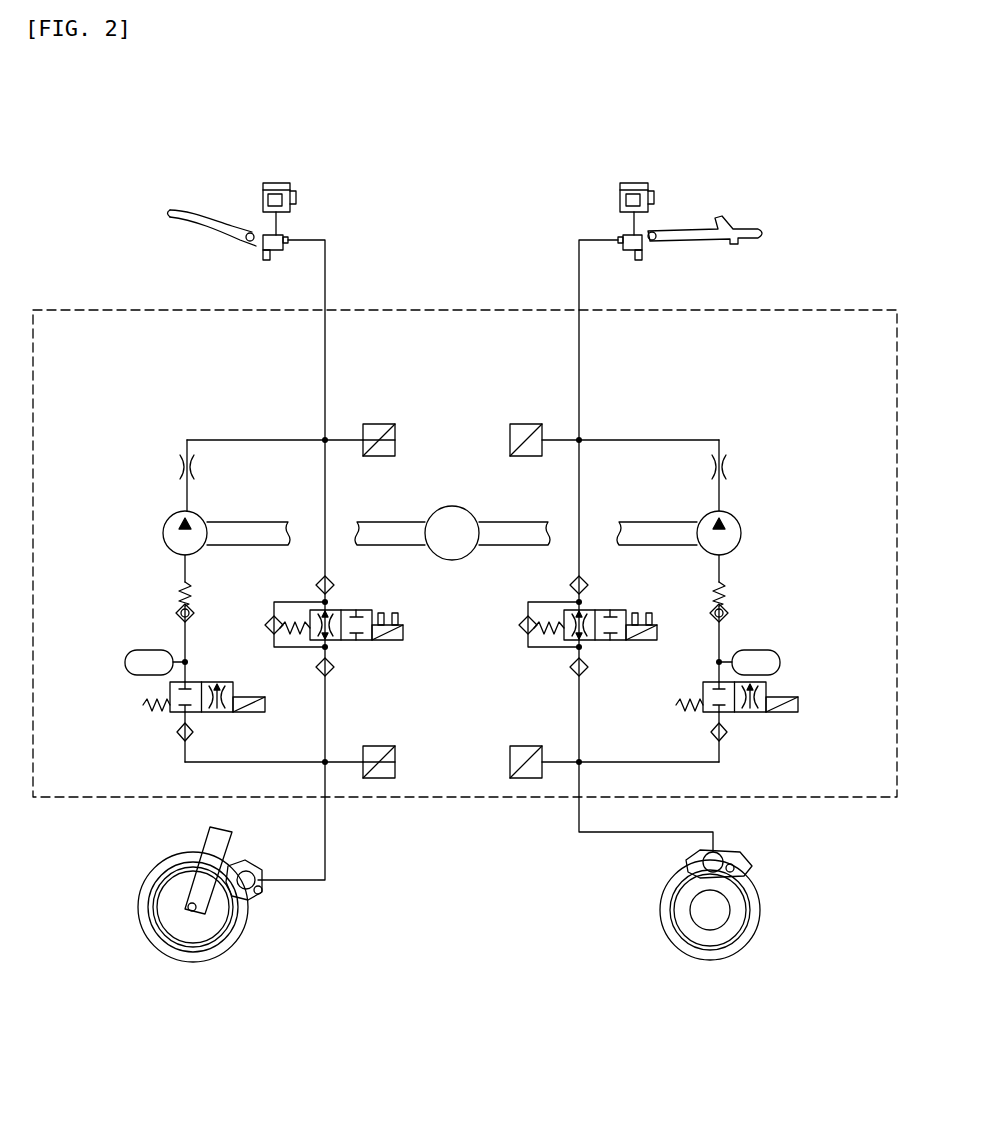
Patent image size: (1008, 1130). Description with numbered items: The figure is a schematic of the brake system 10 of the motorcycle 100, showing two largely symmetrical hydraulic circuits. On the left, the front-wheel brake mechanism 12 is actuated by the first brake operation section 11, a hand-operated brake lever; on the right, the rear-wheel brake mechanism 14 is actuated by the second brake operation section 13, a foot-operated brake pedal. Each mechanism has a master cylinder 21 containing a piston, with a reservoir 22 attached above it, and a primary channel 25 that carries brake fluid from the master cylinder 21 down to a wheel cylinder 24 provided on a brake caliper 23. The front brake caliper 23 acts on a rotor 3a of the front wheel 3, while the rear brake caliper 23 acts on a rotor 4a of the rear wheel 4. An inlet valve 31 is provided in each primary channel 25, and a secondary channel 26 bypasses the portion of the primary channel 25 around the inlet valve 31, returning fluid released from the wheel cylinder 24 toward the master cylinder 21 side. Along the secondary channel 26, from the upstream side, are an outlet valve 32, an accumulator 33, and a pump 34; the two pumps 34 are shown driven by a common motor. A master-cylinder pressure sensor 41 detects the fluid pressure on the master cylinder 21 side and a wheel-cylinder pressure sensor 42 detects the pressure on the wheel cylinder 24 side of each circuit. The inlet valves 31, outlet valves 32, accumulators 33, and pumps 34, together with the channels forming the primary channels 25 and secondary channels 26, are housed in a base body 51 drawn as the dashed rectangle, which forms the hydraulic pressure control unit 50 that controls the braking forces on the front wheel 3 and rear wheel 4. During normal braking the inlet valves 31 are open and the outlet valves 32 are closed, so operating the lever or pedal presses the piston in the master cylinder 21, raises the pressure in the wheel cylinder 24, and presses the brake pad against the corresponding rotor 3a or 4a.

The motorcycle 100 is at (877, 76).
The brake system 10 is at (130, 200).
The first brake operation section 11 is at (198, 212).
The front-wheel brake mechanism 12 is at (360, 130).
The second brake operation section 13 is at (735, 228).
The rear-wheel brake mechanism 14 is at (548, 130).
The hydraulic pressure control unit 50 is at (783, 228).
The base body 51 is at (64, 308).
The master cylinder 21 is at (278, 258).
The reservoir 22 is at (276, 182).
The brake caliper 23 is at (250, 866).
The wheel cylinder 24 is at (258, 888).
The primary channel 25 is at (324, 376).
The secondary channel 26 is at (256, 439).
The inlet valve 31 is at (362, 642).
The outlet valve 32 is at (218, 681).
The accumulator 33 is at (148, 649).
The pump 34 is at (162, 534).
The master-cylinder pressure sensor 41 is at (398, 441).
The wheel-cylinder pressure sensor 42 is at (398, 763).
The front wheel 3 is at (219, 935).
The rotor 3a is at (236, 934).
The rear wheel 4 is at (681, 952).
The rotor 4a is at (668, 936).